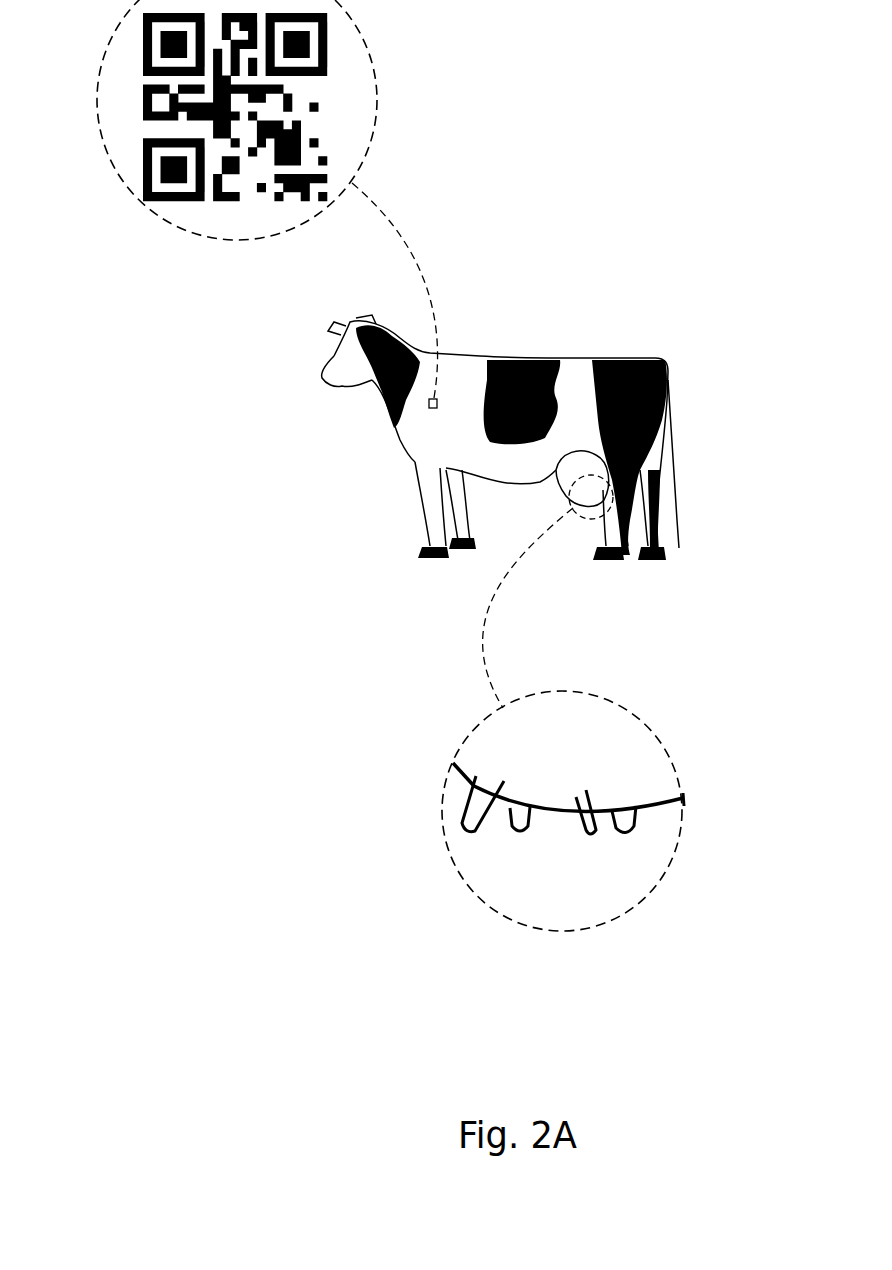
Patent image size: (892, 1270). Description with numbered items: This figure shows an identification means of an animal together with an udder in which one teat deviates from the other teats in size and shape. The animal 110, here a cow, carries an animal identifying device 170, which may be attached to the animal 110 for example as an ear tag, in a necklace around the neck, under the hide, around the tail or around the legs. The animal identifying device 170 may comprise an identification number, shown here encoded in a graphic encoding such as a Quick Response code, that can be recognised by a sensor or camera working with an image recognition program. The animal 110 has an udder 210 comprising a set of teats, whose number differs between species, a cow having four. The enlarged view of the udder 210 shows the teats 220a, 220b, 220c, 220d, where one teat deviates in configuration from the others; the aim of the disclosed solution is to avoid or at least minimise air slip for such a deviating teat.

The animal 110 is at (585, 368).
The animal identifying device 170 is at (300, 85).
The udder 210 is at (597, 493).
The teat 220a is at (592, 820).
The teat 220b is at (474, 806).
The teat 220c is at (510, 823).
The teat 220d is at (635, 817).